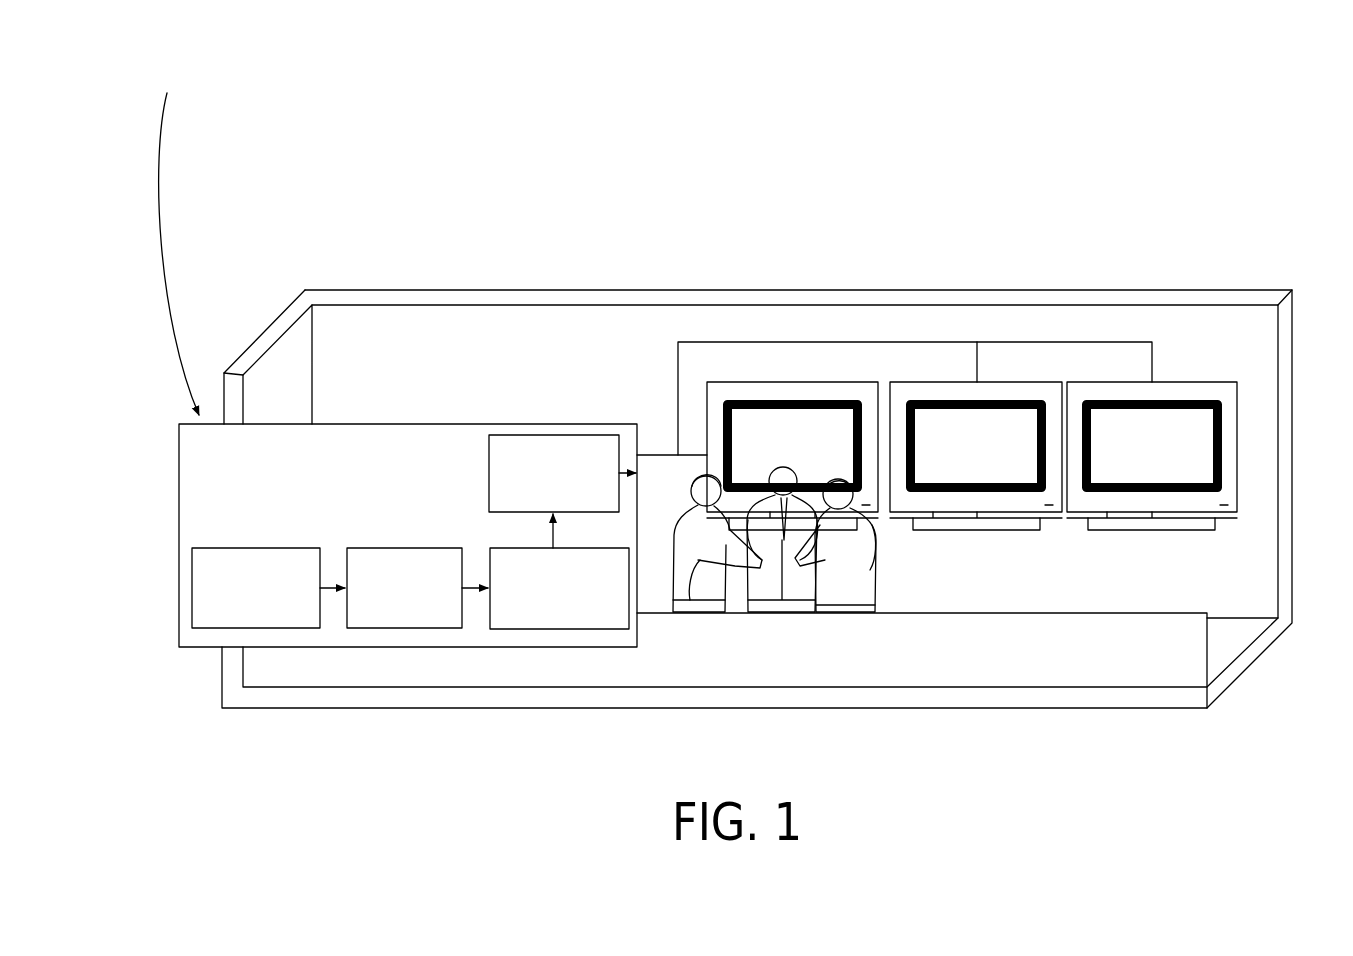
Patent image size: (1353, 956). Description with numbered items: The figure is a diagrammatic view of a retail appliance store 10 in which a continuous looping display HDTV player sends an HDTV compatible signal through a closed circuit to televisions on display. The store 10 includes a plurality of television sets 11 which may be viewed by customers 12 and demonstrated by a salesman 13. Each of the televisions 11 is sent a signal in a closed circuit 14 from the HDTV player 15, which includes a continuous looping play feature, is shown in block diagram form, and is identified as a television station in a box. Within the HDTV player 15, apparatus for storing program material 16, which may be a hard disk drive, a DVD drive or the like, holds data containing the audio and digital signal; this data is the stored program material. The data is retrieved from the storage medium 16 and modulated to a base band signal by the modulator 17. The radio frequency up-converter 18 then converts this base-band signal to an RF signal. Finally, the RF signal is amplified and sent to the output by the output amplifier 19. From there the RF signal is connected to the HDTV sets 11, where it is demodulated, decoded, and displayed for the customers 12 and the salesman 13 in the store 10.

The retail appliance store 10 is at (861, 120).
The television sets 11 is at (843, 443).
The customers 12 is at (787, 467).
The salesman 13 is at (685, 503).
The closed circuit 14 is at (718, 340).
The HDTV player 15 is at (223, 453).
The apparatus for storing program material 16 is at (192, 568).
The modulator 17 is at (347, 618).
The radio frequency up-converter 18 is at (517, 630).
The output amplifier 19 is at (553, 424).